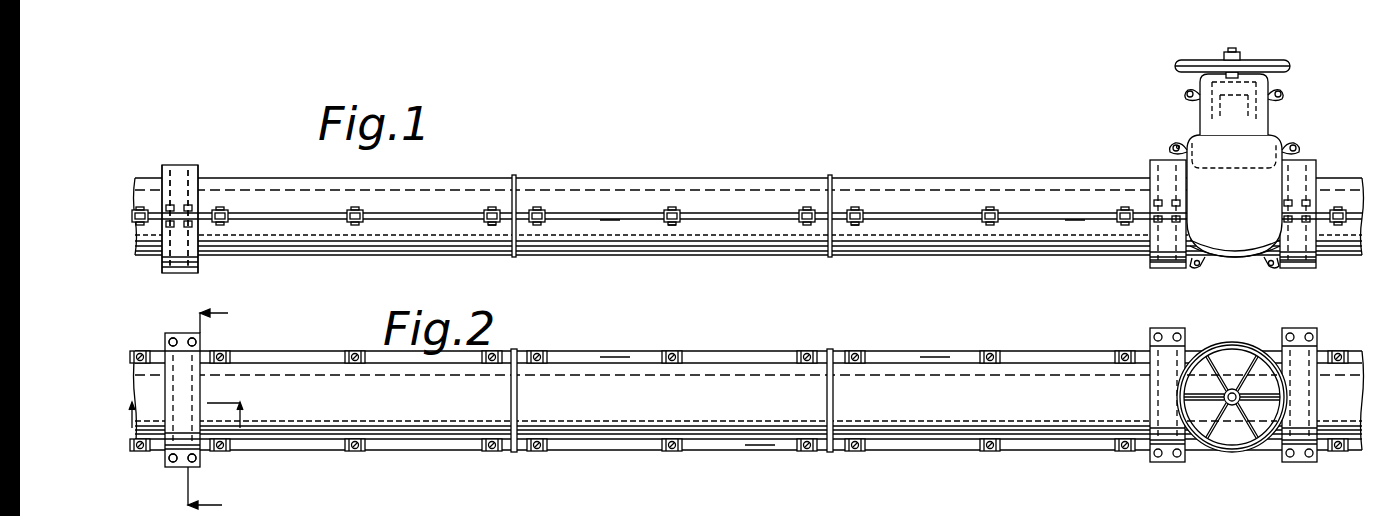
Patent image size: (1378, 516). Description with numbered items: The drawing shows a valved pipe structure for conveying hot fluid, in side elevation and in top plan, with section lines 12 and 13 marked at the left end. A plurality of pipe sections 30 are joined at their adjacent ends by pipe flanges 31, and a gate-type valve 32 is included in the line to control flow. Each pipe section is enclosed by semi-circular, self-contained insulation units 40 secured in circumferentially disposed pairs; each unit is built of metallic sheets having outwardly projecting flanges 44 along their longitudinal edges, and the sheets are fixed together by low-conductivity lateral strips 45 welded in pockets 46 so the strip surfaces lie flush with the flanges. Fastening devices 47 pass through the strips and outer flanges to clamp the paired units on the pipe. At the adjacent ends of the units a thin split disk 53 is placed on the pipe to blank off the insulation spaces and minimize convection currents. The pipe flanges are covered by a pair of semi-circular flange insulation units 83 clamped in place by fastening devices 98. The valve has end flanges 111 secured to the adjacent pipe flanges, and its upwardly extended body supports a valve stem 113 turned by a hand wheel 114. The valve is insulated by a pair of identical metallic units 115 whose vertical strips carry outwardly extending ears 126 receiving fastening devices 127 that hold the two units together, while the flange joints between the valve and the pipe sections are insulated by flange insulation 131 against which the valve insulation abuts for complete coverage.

In FIG. 2, the section line 12- 12 is at (190, 441).
In FIG. 2, the section line 13- 13 is at (226, 408).
In FIG. 1, the pipe section 30 is at (443, 188).
In FIG. 2, the pipe section 30 is at (291, 374).
In FIG. 1, the pipe flange 31 is at (188, 166).
In FIG. 2, the pipe flange 31 is at (198, 362).
In FIG. 1, the valve 32 is at (1180, 58).
In FIG. 2, the valve 32 is at (1240, 460).
In FIG. 1, the insulation unit 40 is at (292, 178).
In FIG. 2, the insulation unit 40 is at (420, 451).
In FIG. 1, the sheet flange 44 is at (618, 219).
In FIG. 2, the sheet flange 44 is at (616, 352).
In FIG. 1, the lateral strip 45 is at (490, 226).
In FIG. 2, the lateral strip 45 is at (1061, 507).
In FIG. 1, the pocket 46 is at (985, 212).
In FIG. 1, the fastening device 47 is at (360, 212).
In FIG. 2, the fastening device 47 is at (676, 355).
In FIG. 1, the disk 53 is at (168, 182).
In FIG. 2, the disk 53 is at (518, 356).
In FIG. 1, the flange insulation unit 83 is at (199, 167).
In FIG. 2, the flange insulation unit 83 is at (170, 350).
In FIG. 2, the fastening device 98 is at (191, 463).
In FIG. 1, the valve flange 111 is at (1168, 268).
In FIG. 1, the valve stem 113 is at (1236, 80).
In FIG. 1, the hand wheel 114 is at (1285, 66).
In FIG. 2, the hand wheel 114 is at (1236, 342).
In FIG. 1, the valve insulation unit 115 is at (1282, 118).
In FIG. 1, the ear 126 is at (1188, 92).
In FIG. 1, the fastening device 127 is at (1176, 146).
In FIG. 1, the flange insulation 131 is at (1148, 160).
In FIG. 2, the flange insulation 131 is at (1153, 338).